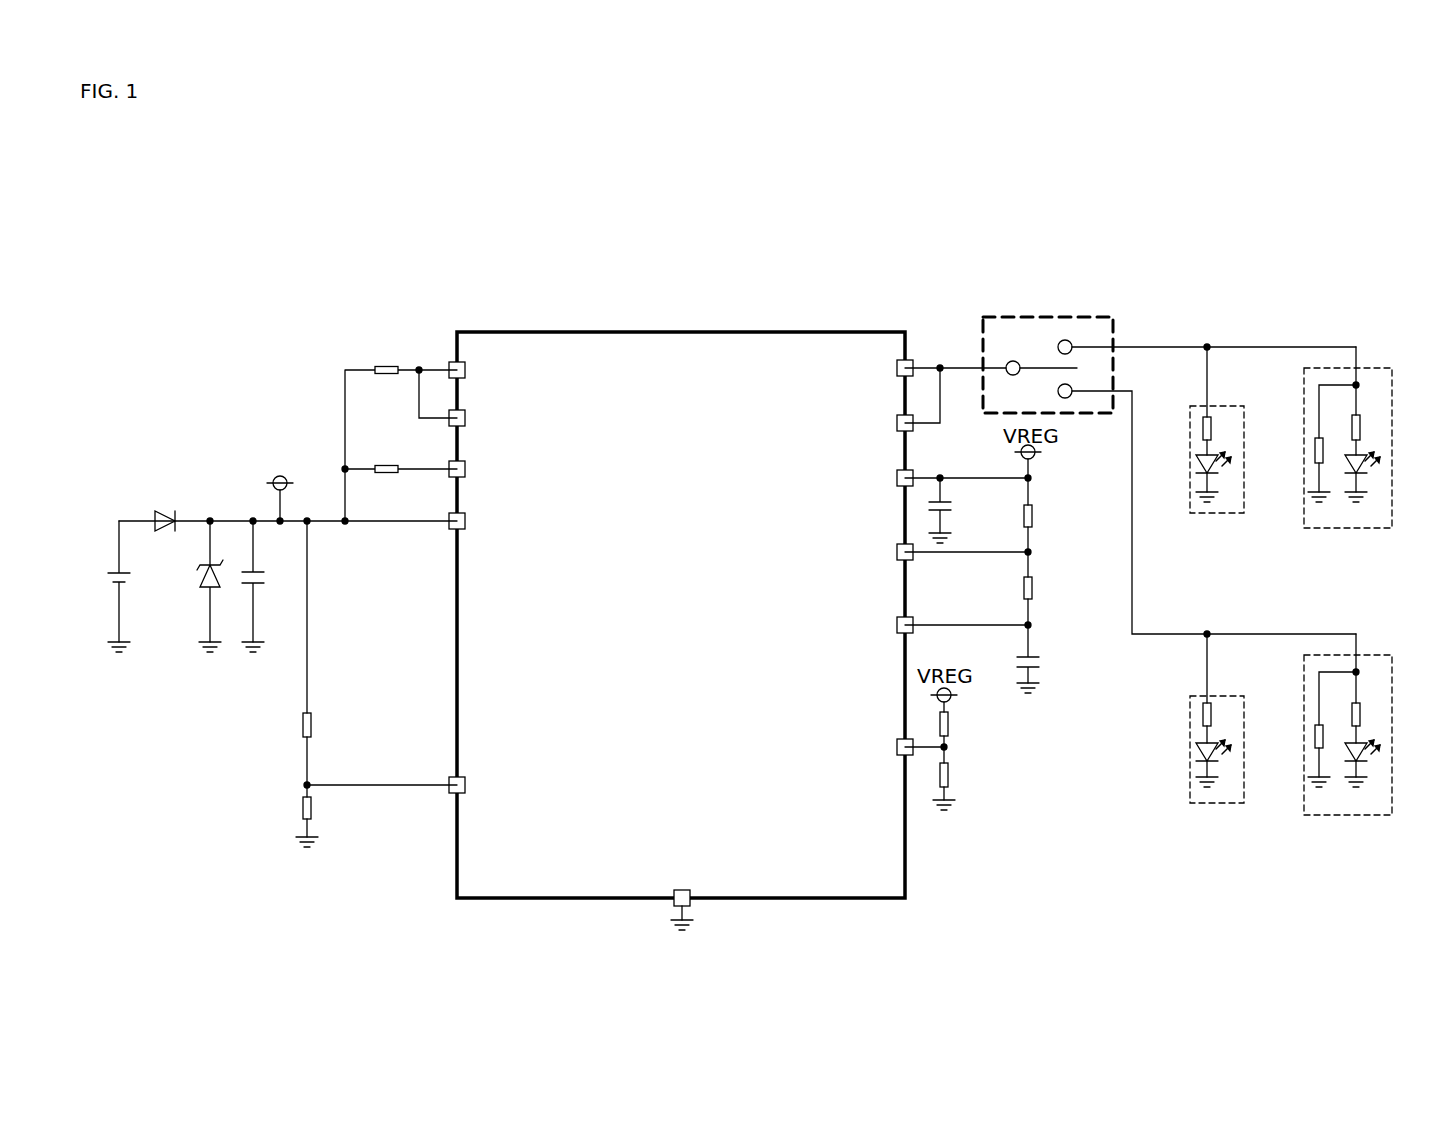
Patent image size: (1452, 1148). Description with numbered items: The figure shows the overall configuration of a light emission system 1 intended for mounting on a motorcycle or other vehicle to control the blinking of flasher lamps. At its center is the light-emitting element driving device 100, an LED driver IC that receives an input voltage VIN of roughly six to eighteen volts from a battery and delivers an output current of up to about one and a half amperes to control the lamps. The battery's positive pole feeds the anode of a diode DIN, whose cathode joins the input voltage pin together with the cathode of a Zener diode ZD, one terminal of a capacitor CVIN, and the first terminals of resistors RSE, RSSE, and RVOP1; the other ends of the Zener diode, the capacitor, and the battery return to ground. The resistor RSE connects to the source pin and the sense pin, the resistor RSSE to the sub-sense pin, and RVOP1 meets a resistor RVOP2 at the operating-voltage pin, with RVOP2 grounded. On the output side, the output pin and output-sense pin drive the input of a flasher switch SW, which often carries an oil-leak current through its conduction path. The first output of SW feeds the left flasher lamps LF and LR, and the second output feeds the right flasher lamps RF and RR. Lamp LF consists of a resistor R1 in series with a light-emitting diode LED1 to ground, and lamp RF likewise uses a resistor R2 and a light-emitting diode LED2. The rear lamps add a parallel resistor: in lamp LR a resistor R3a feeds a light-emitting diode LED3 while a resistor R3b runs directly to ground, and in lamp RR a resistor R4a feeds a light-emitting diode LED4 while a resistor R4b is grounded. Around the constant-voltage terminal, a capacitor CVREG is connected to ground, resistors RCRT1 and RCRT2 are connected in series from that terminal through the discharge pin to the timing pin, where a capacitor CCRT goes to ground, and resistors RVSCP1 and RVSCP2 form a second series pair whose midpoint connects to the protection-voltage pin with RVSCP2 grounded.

The light emission system 1 is at (222, 312).
The light-emitting element driving device 100 is at (686, 331).
The diode DIN is at (168, 512).
The Zener diode ZD is at (199, 578).
The capacitor CVIN is at (257, 586).
The input voltage VIN is at (281, 487).
The resistor RVOP1 is at (302, 724).
The resistor RVOP2 is at (302, 807).
The resistor RSE is at (384, 366).
The resistor RSSE is at (390, 455).
The flasher switch SW is at (1055, 317).
The capacitor CVREG is at (950, 507).
The resistor RCRT1 is at (1033, 516).
The resistor RCRT2 is at (1033, 590).
The capacitor CCRT is at (1042, 665).
The resistor RVSCP1 is at (949, 726).
The resistor RVSCP2 is at (949, 778).
The left flasher lamp LF is at (1224, 395).
The left flasher lamp LR is at (1379, 367).
The right flasher lamp RF is at (1224, 695).
The right flasher lamp RR is at (1379, 656).
The resistor R1 is at (1202, 428).
The resistor R2 is at (1202, 716).
The resistor R3a is at (1363, 428).
The resistor R3b is at (1314, 450).
The resistor R4a is at (1363, 716).
The resistor R4b is at (1314, 739).
The light-emitting diode LED1 is at (1196, 466).
The light-emitting diode LED2 is at (1196, 754).
The light-emitting diode LED3 is at (1386, 466).
The light-emitting diode LED4 is at (1386, 754).